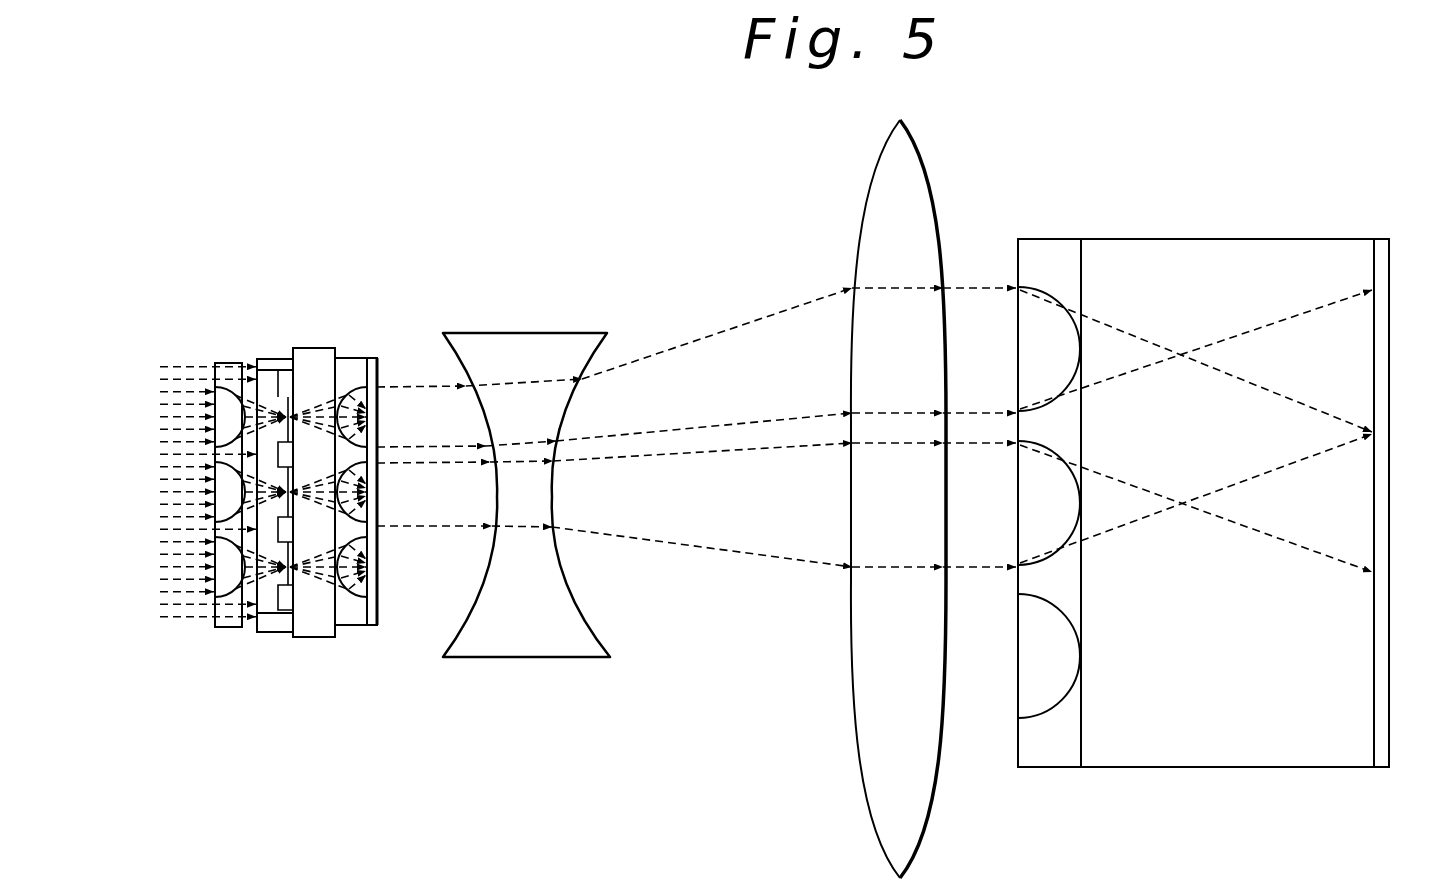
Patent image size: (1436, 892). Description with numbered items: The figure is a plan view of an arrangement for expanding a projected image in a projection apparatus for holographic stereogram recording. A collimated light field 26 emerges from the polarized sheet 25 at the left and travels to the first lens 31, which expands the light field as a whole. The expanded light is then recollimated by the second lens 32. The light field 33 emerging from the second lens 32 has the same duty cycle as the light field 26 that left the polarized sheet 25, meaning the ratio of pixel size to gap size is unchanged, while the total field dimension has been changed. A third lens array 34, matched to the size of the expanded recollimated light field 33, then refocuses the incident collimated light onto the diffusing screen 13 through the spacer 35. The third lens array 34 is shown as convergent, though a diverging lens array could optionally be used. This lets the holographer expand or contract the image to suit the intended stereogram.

The diffusing screen 13 is at (1383, 272).
The polarized sheet 25 is at (378, 620).
The collimated light field 26 is at (392, 386).
The first lens 31 is at (530, 333).
The second lens 32 is at (930, 160).
The recollimated light field 33 is at (963, 289).
The third lens array 34 is at (1058, 238).
The spacer 35 is at (1258, 238).